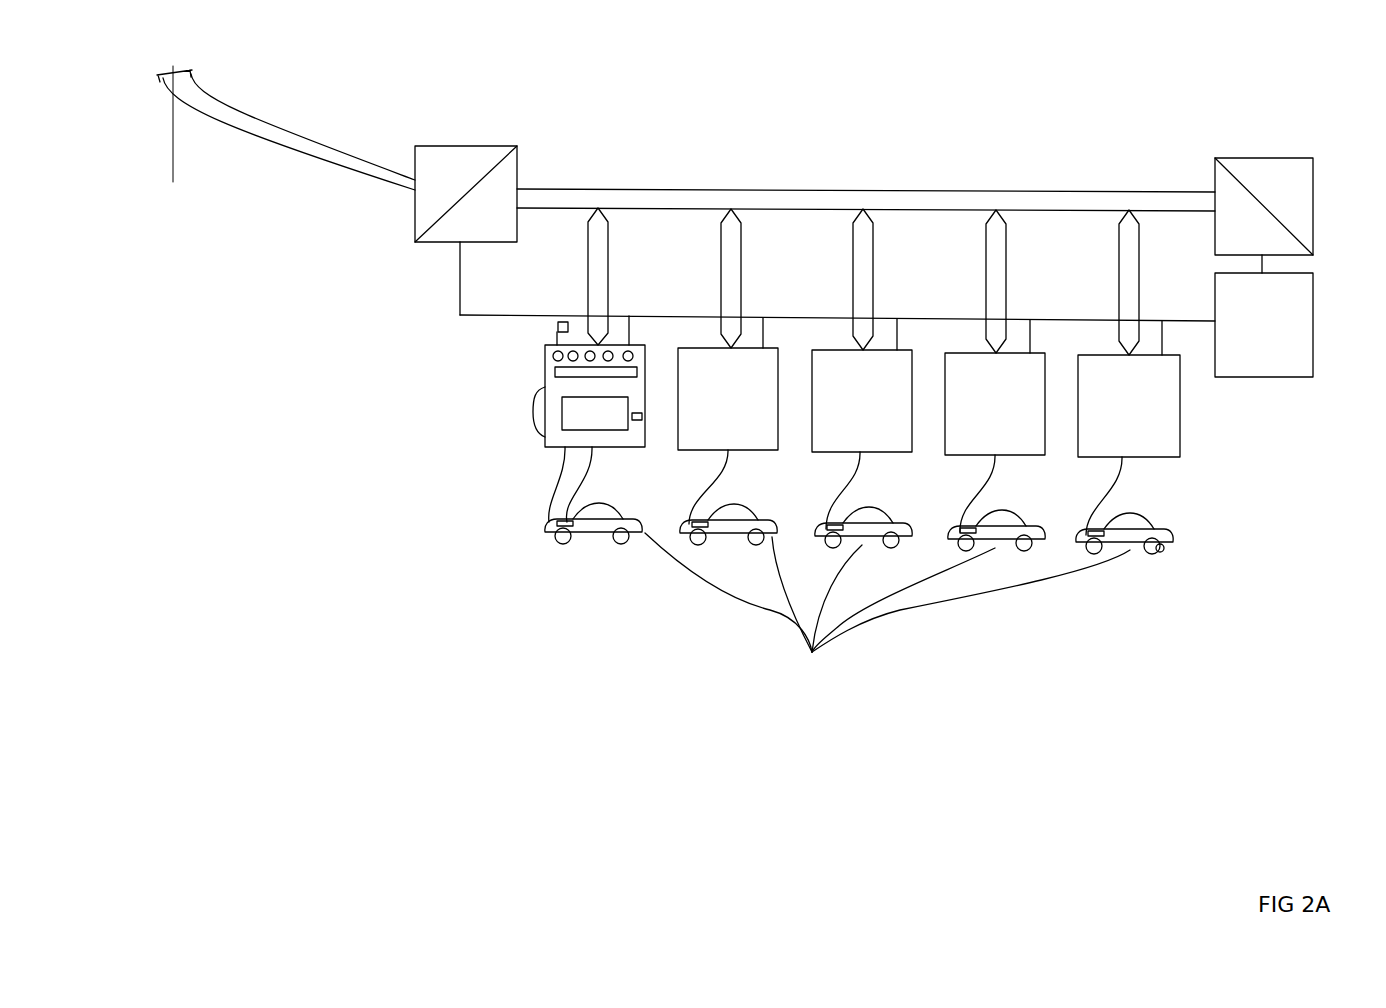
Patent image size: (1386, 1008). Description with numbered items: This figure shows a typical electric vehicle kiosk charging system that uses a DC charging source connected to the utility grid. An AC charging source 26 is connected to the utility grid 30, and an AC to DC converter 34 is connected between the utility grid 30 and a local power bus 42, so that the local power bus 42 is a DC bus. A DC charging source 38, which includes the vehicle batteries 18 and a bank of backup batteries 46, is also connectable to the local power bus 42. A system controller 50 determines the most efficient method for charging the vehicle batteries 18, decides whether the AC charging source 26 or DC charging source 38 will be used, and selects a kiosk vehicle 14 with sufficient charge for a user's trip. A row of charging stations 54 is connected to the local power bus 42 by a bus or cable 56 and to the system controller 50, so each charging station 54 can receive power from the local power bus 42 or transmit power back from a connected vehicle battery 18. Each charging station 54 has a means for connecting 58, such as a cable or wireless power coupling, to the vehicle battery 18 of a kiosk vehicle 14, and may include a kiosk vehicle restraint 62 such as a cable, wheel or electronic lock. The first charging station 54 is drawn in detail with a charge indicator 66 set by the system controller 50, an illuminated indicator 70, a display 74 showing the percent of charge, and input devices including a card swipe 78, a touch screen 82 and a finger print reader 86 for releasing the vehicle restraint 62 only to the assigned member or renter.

The kiosk vehicle 14 is at (546, 526).
The vehicle battery 18 is at (887, 611).
The AC charging source 26 is at (466, 194).
The utility grid 30 is at (204, 100).
The AC to DC converter 34 is at (466, 194).
The DC charging source 38 is at (1264, 206).
The local power bus 42 is at (856, 188).
The bank of backup batteries 46 is at (1264, 206).
The system controller 50 is at (1274, 341).
The charging station 54 is at (566, 450).
The bus or cable 56 is at (587, 272).
The means for connecting 58 is at (586, 483).
The kiosk vehicle restraint 62 is at (1165, 551).
The charge indicator 66 is at (556, 327).
The illuminated indicator 70 is at (550, 350).
The display 74 is at (552, 368).
The card swipe 78 is at (533, 410).
The touch screen 82 is at (566, 425).
The finger print reader 86 is at (645, 418).